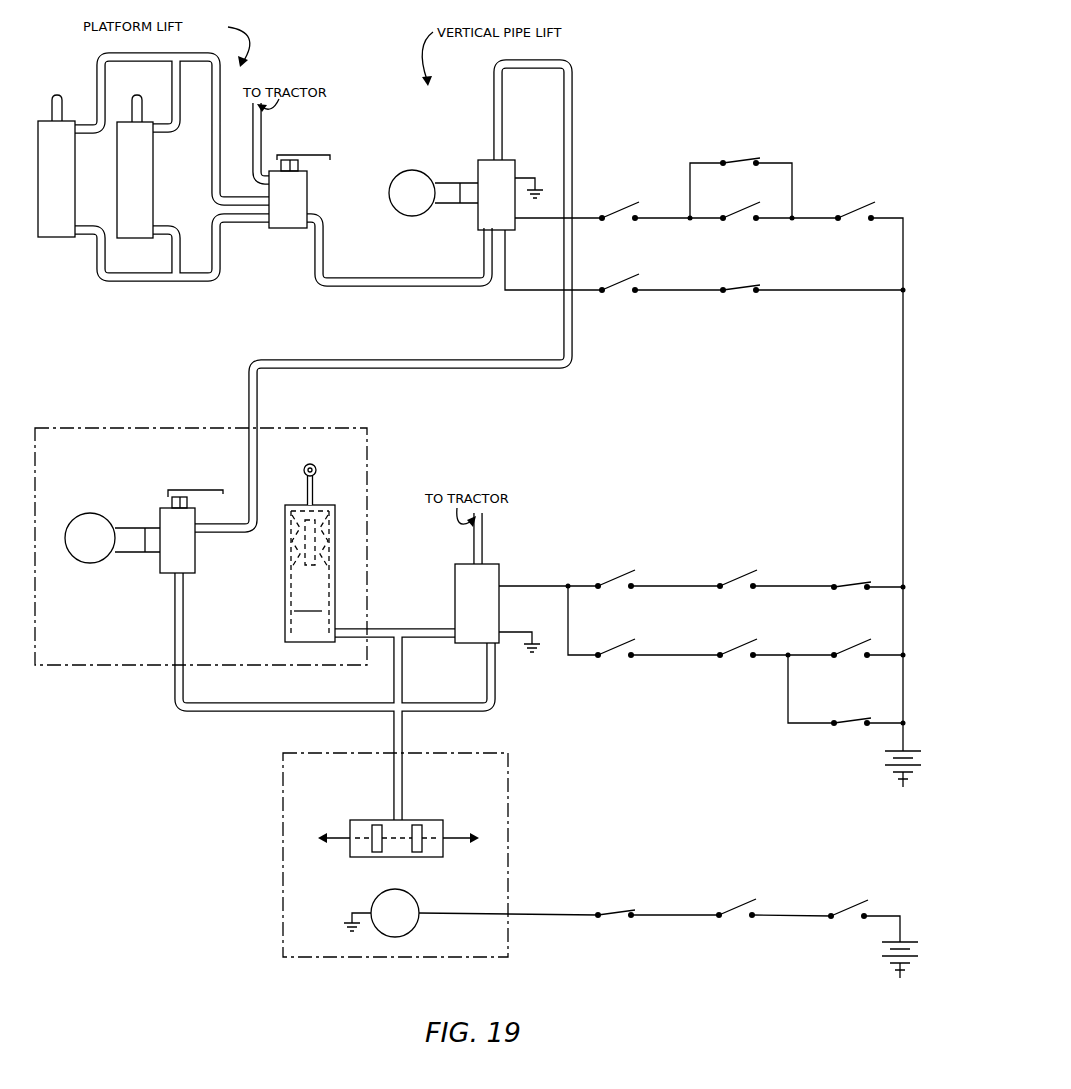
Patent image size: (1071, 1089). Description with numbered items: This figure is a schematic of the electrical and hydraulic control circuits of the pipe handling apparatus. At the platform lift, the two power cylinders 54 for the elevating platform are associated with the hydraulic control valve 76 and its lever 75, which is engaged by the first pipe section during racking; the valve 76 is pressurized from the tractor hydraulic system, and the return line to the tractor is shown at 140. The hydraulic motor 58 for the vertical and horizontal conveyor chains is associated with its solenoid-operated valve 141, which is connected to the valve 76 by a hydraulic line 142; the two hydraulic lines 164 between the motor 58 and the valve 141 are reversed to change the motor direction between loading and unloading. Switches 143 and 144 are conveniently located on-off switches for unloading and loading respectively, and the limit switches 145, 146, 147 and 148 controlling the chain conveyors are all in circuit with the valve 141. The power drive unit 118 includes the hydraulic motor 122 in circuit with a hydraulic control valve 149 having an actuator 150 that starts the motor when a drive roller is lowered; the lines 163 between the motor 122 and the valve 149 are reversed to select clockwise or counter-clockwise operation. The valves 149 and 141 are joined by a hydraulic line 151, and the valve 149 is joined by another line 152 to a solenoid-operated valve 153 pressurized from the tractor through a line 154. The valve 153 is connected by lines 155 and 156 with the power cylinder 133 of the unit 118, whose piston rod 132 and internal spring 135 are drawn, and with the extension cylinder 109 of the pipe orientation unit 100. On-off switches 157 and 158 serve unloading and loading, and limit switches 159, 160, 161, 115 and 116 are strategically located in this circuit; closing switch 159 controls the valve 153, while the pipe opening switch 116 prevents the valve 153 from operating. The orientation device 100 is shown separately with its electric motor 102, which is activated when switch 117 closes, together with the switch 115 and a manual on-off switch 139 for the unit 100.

The hydraulic cylinders 54 is at (128, 168).
The return line to the tractor 140 is at (265, 139).
The lever 75 is at (322, 152).
The hydraulic control valve 76 is at (308, 192).
The hydraulic motor 58 is at (402, 171).
The hydraulic lines 164 is at (465, 182).
The solenoid-operated valve 141 is at (513, 168).
The hydraulic line 151 is at (502, 129).
The hydraulic line 142 is at (398, 284).
The on-off switch 144 is at (619, 222).
The limit switch 145 is at (740, 167).
The limit switch 147 is at (740, 222).
The limit switch 146 is at (853, 222).
The on-off switch 143 is at (619, 294).
The limit switch 148 is at (740, 294).
The power drive unit 118 is at (339, 430).
The actuator 150 is at (202, 490).
The hydraulic motor 122 is at (99, 517).
The hydraulic control valve 149 is at (196, 567).
The hydraulic lines 163 is at (143, 556).
The piston rod 132 is at (314, 494).
The spring 135 is at (343, 550).
The power cylinder 133 is at (310, 573).
The hydraulic line 155 is at (394, 628).
The hydraulic line 156 is at (402, 673).
The hydraulic line 152 is at (211, 708).
The hydraulic line 154 is at (483, 545).
The solenoid-operated valve 153 is at (500, 568).
The on-off switch 158 is at (615, 590).
The limit switch 159 is at (737, 590).
The limit switch 160 is at (851, 591).
The on-off switch 157 is at (615, 659).
The limit switch 161 is at (737, 659).
The limit switch 115 is at (851, 659).
The limit switch 116 is at (851, 727).
The pipe gate orientation drive device 100 is at (480, 759).
The extension cylinder 109 is at (432, 820).
The electric motor 102 is at (409, 897).
The switch 117 is at (736, 919).
The manual on and off switch 139 is at (848, 920).